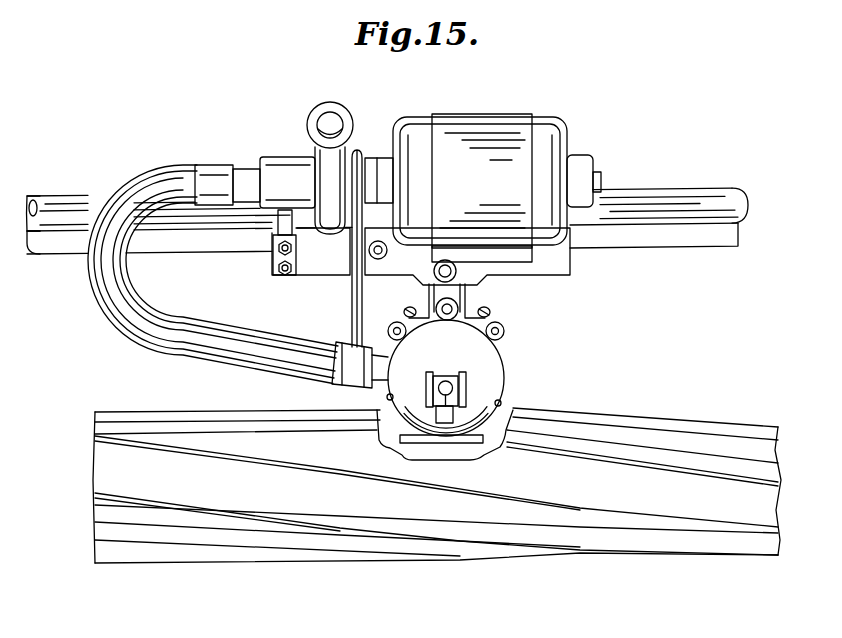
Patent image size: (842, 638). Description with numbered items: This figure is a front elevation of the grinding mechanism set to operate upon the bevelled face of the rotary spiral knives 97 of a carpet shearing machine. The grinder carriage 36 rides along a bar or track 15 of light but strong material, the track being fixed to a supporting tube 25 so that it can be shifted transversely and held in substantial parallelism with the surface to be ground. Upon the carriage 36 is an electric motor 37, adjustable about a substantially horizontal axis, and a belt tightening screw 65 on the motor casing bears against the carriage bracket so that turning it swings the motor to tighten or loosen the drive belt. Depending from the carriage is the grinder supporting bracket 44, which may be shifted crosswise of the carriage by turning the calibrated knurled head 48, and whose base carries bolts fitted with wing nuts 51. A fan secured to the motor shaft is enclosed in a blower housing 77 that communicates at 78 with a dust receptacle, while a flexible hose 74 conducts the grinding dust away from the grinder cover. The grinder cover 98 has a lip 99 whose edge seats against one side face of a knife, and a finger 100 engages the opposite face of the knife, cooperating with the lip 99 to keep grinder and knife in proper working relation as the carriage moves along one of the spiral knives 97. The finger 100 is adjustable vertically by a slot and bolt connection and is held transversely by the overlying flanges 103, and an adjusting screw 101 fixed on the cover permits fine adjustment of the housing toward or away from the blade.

The track 15 is at (665, 243).
The tube 25 is at (672, 194).
The carriage 36 is at (318, 270).
The electric motor 37 is at (552, 142).
The grinder supporting bracket 44 is at (466, 290).
The calibrated knurled head 48 is at (437, 280).
The wing nut 51 is at (404, 313).
The belt tightening screw 65 is at (378, 259).
The flexible hose 74 is at (245, 333).
The blower housing 77 is at (328, 229).
The blower housing outlet 78 is at (349, 113).
The knives 97 is at (708, 418).
The cover 98 is at (496, 356).
The lip 99 is at (436, 441).
The finger 100 is at (458, 418).
The adjusting screw 101 is at (445, 320).
The overlying flanges 103 is at (427, 379).